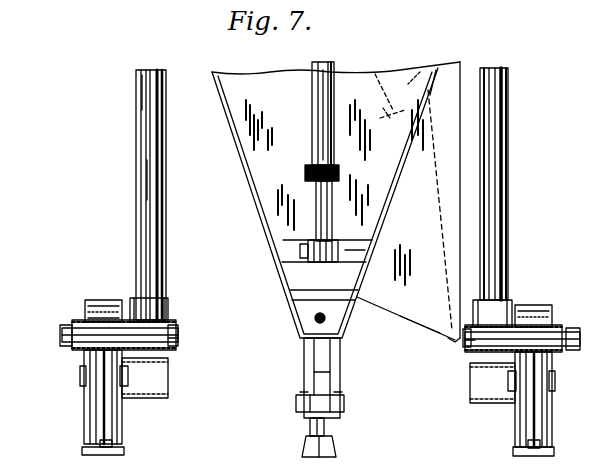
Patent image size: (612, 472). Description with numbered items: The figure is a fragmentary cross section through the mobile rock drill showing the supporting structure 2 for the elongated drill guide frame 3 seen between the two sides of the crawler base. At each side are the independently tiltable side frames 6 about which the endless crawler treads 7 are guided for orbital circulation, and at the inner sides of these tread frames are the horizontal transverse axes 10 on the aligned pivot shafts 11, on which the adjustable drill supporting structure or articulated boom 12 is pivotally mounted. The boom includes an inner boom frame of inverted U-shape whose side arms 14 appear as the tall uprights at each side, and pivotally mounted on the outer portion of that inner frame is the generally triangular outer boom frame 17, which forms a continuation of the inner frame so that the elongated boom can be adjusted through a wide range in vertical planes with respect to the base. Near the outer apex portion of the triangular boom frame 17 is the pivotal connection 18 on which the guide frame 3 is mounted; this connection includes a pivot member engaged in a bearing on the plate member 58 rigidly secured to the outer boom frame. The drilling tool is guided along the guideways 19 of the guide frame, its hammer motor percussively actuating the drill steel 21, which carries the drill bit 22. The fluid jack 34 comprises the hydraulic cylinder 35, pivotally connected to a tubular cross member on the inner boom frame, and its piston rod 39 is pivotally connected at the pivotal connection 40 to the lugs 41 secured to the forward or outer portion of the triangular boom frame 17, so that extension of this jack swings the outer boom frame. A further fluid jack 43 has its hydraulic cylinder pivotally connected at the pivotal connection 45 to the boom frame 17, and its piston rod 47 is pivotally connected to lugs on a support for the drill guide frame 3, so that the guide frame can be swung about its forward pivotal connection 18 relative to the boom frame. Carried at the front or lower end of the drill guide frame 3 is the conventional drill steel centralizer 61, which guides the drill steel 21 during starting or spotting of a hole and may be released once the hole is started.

The supporting structure 2 is at (508, 118).
The drill guide frame 3 is at (340, 360).
The side frames 6 is at (82, 403).
The crawler treads 7 is at (103, 300).
The horizontal transverse axes 10 is at (64, 340).
The pivot shafts 11 is at (168, 343).
The articulated boom 12 is at (166, 78).
The side arms 14 is at (141, 175).
The outer boom frame 17 is at (275, 256).
The pivotal connection 18 is at (313, 321).
The guideways 19 is at (141, 93).
The drill steel 21 is at (324, 428).
The drill bit 22 is at (334, 448).
The fluid jack 34 is at (312, 94).
The hydraulic cylinder 35 is at (328, 120).
The piston rod 39 is at (315, 188).
The pivotal connection 40 is at (300, 252).
The lugs 41 is at (312, 250).
The fluid jack 43 is at (440, 92).
The pivotal connection 45 is at (420, 336).
The piston rod 47 is at (418, 70).
The plate member 58 is at (360, 258).
The drill steel centralizer 61 is at (342, 404).